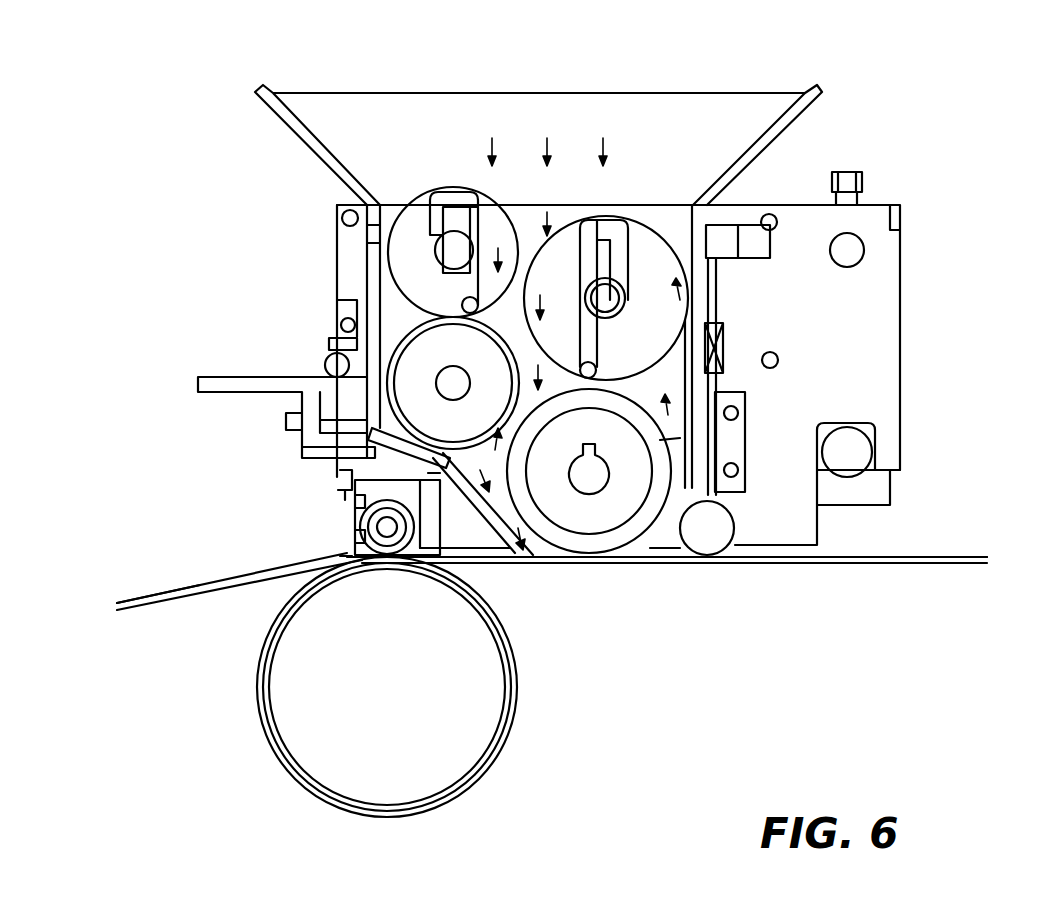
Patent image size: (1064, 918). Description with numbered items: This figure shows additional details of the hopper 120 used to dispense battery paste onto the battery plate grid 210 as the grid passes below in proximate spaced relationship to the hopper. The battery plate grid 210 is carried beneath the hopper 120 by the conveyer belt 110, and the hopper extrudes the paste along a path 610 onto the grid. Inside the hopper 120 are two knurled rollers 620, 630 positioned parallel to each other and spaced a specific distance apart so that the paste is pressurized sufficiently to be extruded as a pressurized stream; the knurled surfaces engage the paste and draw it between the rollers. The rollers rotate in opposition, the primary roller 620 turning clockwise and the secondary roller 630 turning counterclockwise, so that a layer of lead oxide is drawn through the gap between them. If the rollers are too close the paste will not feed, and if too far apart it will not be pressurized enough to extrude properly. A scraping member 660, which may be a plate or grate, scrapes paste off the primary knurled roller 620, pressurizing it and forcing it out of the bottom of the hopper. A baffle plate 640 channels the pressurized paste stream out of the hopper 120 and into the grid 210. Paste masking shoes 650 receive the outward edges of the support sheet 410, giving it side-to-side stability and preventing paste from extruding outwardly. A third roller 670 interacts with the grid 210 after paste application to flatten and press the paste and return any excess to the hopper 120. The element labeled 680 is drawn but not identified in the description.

The conveyer belt 110 is at (327, 735).
The hopper 120 is at (375, 103).
The battery plate grid 210 is at (146, 598).
The support sheet 410 is at (345, 558).
The path 610 is at (540, 398).
The primary knurled roller 620 is at (518, 360).
The secondary knurled roller 630 is at (660, 440).
The baffle plate 640 is at (505, 493).
The paste masking shoe 650 is at (676, 563).
The scraping member 660 is at (415, 462).
The third roller 670 is at (718, 545).
The bracket 680 is at (706, 243).